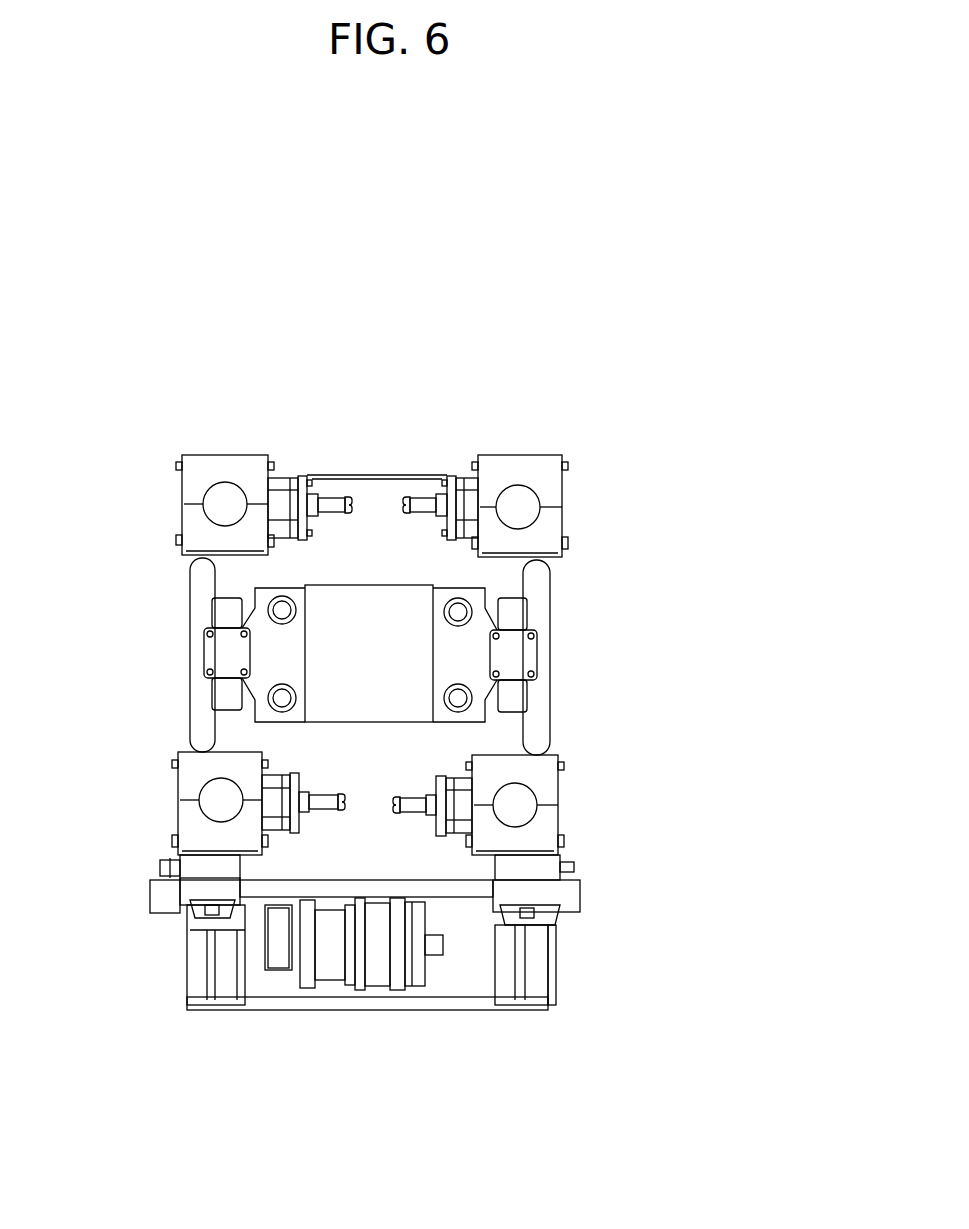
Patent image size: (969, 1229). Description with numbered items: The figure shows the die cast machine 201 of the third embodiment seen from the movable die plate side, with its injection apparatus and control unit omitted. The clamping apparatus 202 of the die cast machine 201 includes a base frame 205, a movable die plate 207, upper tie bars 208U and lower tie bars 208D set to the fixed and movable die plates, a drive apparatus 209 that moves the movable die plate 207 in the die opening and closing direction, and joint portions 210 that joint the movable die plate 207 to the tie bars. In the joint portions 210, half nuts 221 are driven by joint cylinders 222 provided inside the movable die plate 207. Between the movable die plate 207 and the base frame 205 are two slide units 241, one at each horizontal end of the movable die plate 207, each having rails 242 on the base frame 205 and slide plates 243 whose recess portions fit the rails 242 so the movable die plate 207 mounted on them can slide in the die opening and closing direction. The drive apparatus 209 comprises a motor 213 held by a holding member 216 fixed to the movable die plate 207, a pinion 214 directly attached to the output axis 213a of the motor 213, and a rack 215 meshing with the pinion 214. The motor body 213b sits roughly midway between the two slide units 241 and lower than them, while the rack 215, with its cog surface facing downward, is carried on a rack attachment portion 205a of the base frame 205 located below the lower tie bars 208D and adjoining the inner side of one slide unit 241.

The die cast machine 201 is at (412, 266).
The clamping apparatus 202 is at (237, 420).
The half nuts 221 is at (244, 468).
The joint cylinders 222 is at (325, 500).
The movable die plate 207 is at (385, 500).
The joint portions 210 is at (527, 480).
The upper tie bars 208U is at (527, 512).
The lower tie bars 208D is at (520, 805).
The slide units 241 is at (593, 858).
The slide plates 243 is at (560, 895).
The rails 242 is at (560, 920).
The rack attachment portion 205a is at (258, 893).
The rack 215 is at (260, 912).
The pinion 214 is at (275, 935).
The motor 213 is at (372, 978).
The output axis 213a is at (276, 972).
The motor body 213b is at (395, 982).
The holding member 216 is at (440, 955).
The base frame 205 is at (515, 1005).
The drive apparatus 209 is at (578, 975).